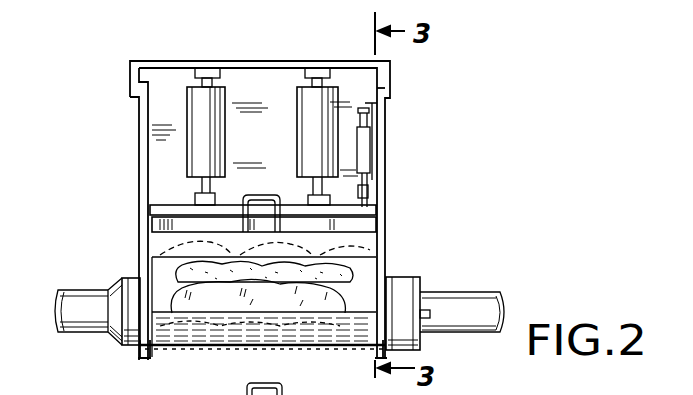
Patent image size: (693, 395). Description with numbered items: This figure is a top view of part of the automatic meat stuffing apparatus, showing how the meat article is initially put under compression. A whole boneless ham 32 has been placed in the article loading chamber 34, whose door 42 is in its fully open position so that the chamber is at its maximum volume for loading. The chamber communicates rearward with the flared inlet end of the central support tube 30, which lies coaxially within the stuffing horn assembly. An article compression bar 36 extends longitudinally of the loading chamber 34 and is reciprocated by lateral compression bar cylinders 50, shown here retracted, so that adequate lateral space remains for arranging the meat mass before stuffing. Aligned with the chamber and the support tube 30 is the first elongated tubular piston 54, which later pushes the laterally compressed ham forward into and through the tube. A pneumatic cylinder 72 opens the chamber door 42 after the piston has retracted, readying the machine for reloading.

The central support tube 30 is at (80, 292).
The whole boneless ham 32 is at (178, 281).
The article loading chamber 34 is at (365, 282).
The article compression bar 36 is at (328, 223).
The door 42 is at (343, 233).
The lateral compression bar cylinders 50 is at (300, 113).
The first elongated tubular piston 54 is at (478, 298).
The pneumatic cylinder 72 is at (372, 152).